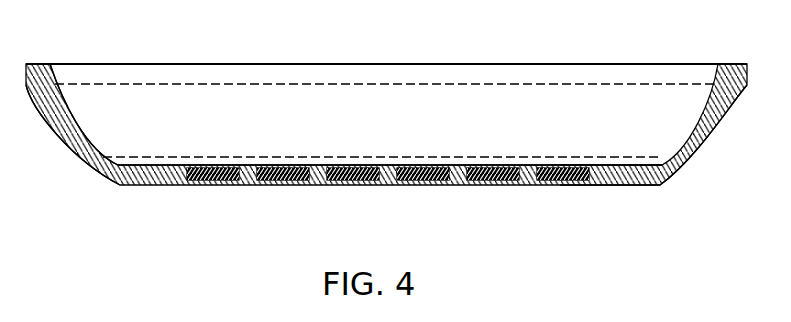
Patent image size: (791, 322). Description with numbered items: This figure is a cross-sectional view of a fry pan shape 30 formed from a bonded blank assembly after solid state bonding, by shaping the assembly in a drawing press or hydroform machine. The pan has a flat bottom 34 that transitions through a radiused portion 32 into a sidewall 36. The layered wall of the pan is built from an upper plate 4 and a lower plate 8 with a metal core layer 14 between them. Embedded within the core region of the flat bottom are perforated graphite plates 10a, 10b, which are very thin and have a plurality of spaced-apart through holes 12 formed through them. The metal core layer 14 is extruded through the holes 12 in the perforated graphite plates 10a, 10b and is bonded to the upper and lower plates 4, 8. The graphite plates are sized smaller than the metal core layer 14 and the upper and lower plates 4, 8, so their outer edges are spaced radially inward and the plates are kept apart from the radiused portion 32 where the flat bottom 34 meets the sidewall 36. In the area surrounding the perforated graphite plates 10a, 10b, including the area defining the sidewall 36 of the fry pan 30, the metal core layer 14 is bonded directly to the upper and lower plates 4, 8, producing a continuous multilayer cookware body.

The fry pan shape 30 is at (583, 50).
The sidewall 36 is at (80, 128).
The radiused portion 32 is at (97, 173).
The flat bottom 34 is at (157, 167).
The through holes 12 is at (391, 173).
The perforated graphite plate 10a is at (391, 173).
The perforated graphite plate 10b is at (552, 183).
The upper plate 4 is at (628, 167).
The lower plate 8 is at (625, 185).
The metal core layer 14 is at (690, 167).